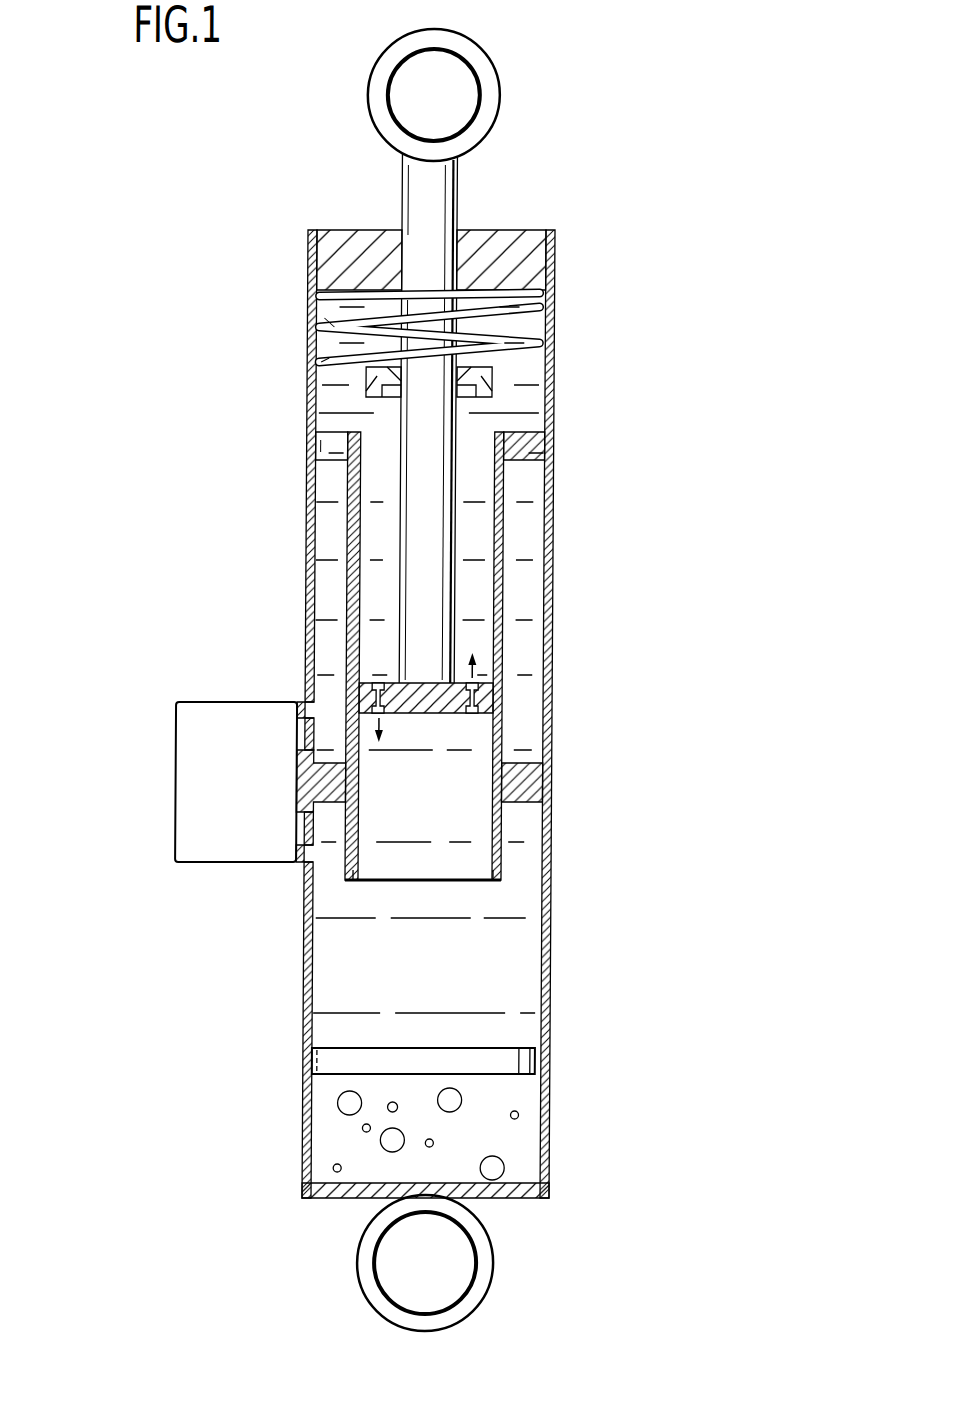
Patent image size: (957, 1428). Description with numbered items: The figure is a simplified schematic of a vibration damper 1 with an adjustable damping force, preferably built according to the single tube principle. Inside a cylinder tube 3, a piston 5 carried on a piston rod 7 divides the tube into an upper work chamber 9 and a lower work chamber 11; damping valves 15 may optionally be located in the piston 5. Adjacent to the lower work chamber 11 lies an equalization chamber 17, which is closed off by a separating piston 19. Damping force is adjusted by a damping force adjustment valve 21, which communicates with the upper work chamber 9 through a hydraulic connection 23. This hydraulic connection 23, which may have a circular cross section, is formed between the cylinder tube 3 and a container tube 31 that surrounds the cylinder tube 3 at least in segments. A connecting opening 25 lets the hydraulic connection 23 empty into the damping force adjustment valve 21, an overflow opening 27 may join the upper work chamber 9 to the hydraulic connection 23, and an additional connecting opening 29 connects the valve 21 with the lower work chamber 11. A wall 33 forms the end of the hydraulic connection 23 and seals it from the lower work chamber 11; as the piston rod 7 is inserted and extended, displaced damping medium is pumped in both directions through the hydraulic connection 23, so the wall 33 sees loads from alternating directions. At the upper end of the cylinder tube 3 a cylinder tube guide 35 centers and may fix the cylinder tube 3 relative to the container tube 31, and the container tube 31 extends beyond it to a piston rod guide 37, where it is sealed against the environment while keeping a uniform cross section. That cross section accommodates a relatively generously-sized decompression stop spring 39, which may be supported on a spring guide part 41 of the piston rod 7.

The vibration damper 1 is at (116, 875).
The cylinder tube 3 is at (510, 848).
The piston 5 is at (461, 676).
The piston rod 7 is at (527, 297).
The upper work chamber 9 is at (331, 344).
The lower work chamber 11 is at (498, 967).
The damping valves 15 is at (487, 698).
The equalization chamber 17 is at (494, 1150).
The separating piston 19 is at (508, 1062).
The damping force adjustment valve 21 is at (209, 722).
The hydraulic connection 23 is at (521, 565).
The connecting opening 25 is at (301, 705).
The overflow opening 27 is at (331, 447).
The additional connecting opening 29 is at (301, 860).
The container tube 31 is at (307, 978).
The wall 33 is at (524, 778).
The cylinder tube guide 35 is at (530, 445).
The piston rod guide 37 is at (497, 263).
The decompression stop spring 39 is at (330, 314).
The spring guide part 41 is at (497, 382).